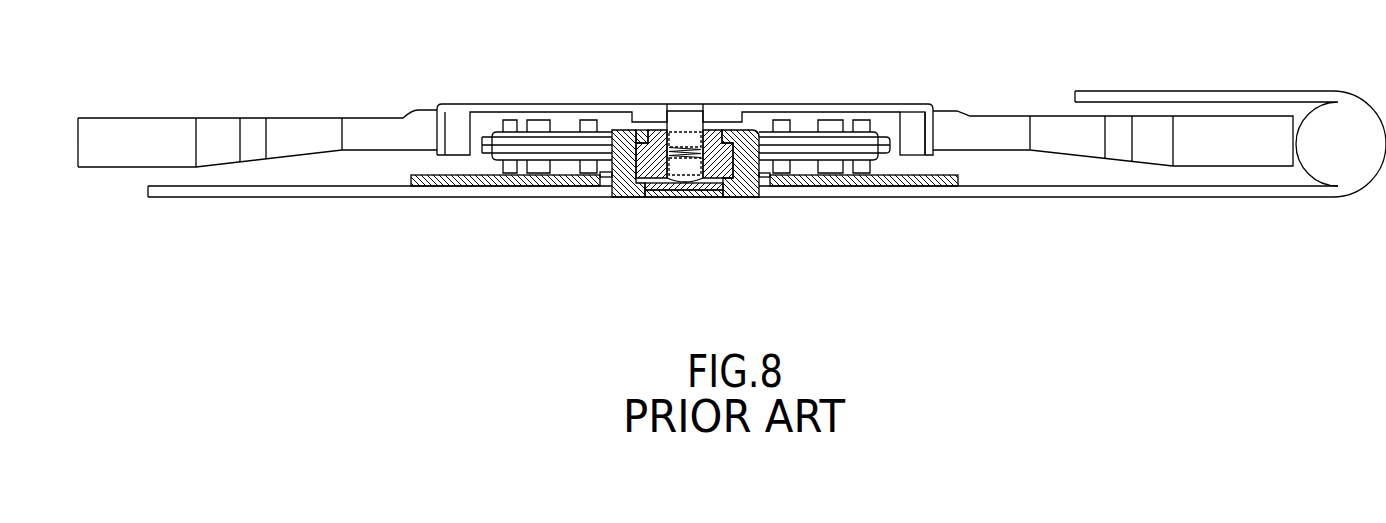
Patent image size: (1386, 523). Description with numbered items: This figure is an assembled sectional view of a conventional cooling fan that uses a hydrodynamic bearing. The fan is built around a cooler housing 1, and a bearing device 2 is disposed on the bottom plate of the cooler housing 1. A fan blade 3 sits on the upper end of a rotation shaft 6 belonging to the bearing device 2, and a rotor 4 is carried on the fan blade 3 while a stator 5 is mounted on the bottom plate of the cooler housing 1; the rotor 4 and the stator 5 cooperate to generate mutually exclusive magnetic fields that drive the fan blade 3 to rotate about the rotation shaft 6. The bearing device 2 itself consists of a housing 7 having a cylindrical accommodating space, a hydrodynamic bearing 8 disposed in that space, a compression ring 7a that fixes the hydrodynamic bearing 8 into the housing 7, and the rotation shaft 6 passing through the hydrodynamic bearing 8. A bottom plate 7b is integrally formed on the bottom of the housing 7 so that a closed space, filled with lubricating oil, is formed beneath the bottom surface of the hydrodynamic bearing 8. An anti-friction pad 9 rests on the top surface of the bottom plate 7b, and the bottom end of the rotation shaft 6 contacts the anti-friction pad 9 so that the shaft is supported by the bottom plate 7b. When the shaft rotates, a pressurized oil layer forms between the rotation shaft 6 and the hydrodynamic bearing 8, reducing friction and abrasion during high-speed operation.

The cooler housing 1 is at (1213, 90).
The bearing device 2 is at (641, 209).
The fan blade 3 is at (810, 104).
The rotor 4 is at (916, 122).
The stator 5 is at (860, 145).
The rotation shaft 6 is at (683, 116).
The housing 7 is at (745, 197).
The compression ring 7a is at (746, 133).
The bottom plate 7b is at (684, 197).
The hydrodynamic bearing 8 is at (637, 132).
The anti-friction pad 9 is at (708, 197).